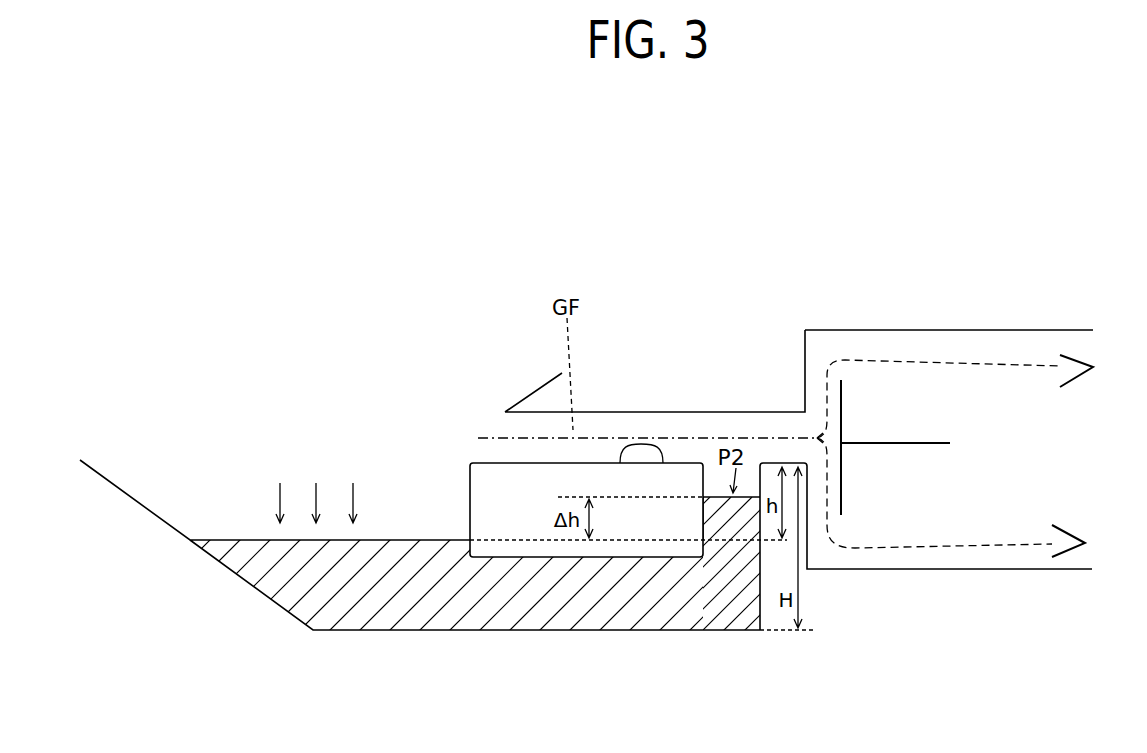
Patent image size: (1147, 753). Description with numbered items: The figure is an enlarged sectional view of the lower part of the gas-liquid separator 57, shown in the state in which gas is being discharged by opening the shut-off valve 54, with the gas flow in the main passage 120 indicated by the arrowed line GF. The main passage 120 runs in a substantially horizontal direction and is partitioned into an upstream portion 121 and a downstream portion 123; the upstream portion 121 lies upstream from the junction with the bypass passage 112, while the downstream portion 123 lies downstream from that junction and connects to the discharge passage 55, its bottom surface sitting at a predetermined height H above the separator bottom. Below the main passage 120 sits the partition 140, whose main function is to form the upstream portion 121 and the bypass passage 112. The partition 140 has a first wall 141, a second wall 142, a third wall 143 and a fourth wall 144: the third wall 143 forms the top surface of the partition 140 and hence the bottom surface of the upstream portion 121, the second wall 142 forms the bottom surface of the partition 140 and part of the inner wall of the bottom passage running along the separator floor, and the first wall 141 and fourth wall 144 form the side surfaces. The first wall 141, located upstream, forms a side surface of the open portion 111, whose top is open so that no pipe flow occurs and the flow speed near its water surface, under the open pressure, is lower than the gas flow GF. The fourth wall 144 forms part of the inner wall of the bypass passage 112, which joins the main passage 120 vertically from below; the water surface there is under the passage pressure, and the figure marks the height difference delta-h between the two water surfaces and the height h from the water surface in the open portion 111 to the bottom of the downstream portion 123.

The shut-off valve 54 is at (843, 495).
The discharge passage 55 is at (1002, 330).
The gas-liquid separator 57 is at (785, 238).
The open portion 111 is at (287, 436).
The bypass passage 112 is at (715, 479).
The main passage 120 is at (600, 288).
The upstream portion 121 is at (615, 428).
The downstream portion 123 is at (793, 428).
The partition 140 is at (513, 492).
The first wall 141 is at (470, 513).
The second wall 142 is at (573, 557).
The third wall 143 is at (663, 463).
The fourth wall 144 is at (707, 557).